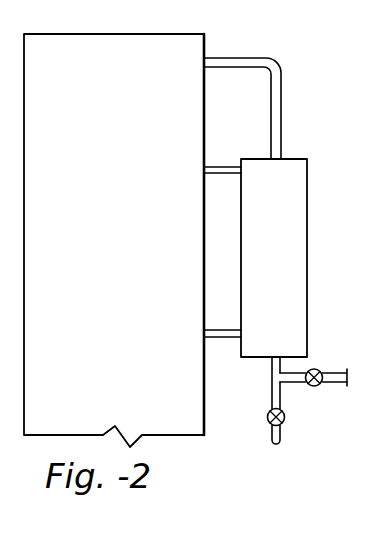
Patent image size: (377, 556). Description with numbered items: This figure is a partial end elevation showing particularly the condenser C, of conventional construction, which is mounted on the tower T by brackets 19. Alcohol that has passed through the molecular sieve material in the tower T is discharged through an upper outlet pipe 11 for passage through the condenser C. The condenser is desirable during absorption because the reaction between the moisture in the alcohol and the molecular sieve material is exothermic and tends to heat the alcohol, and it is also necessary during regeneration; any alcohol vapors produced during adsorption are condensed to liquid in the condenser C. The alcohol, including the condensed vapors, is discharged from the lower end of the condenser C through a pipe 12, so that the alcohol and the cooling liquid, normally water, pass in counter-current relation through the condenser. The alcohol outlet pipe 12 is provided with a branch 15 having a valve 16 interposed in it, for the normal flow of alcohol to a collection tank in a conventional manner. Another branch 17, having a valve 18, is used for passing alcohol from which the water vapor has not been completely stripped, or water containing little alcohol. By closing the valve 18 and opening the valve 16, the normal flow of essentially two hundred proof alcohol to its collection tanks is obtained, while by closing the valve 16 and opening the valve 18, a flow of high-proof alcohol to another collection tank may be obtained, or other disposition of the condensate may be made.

The tower T is at (118, 187).
The condenser C is at (308, 256).
The upper outlet pipe 11 is at (283, 84).
The brackets 19 is at (222, 166).
The alcohol outlet pipe 12 is at (271, 378).
The branch 15 is at (290, 383).
The valve 16 is at (313, 368).
The branch 17 is at (270, 400).
The valve 18 is at (282, 434).